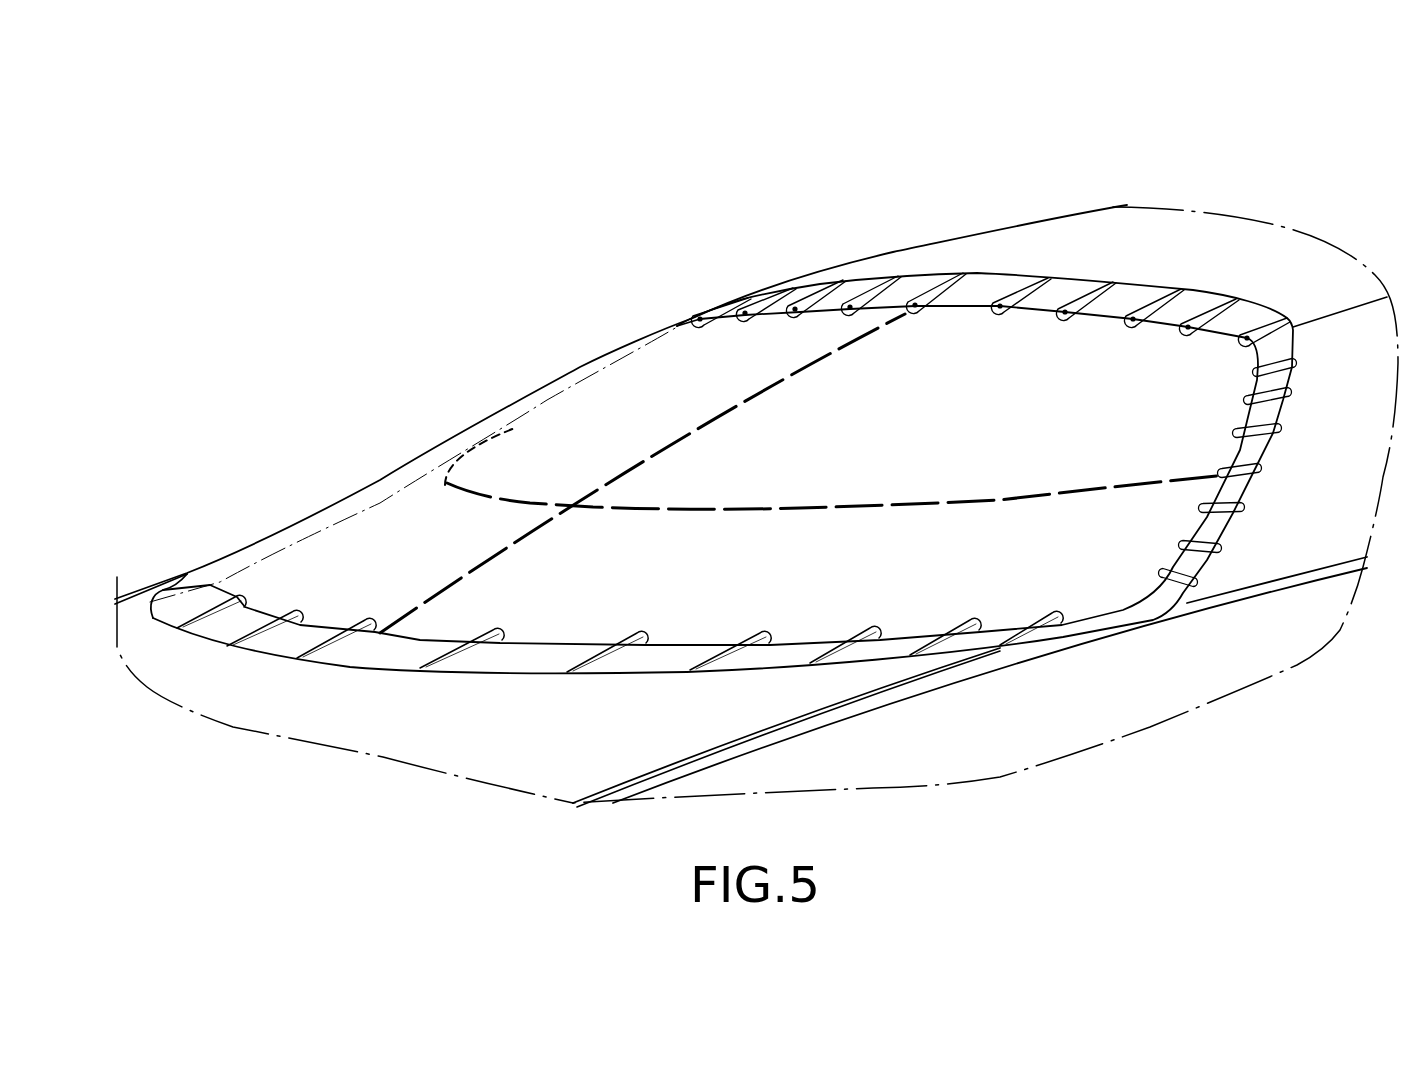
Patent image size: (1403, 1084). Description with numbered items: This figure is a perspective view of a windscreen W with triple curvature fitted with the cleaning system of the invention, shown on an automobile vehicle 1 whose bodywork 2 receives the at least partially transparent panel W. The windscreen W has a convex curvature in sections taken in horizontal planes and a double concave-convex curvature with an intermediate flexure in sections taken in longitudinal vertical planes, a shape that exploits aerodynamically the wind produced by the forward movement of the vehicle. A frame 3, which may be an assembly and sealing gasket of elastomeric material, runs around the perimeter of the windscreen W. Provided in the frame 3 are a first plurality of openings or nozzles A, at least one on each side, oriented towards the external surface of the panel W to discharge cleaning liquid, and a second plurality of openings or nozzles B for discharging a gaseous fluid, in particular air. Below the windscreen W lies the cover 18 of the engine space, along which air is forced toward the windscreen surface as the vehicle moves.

The automobile vehicle 1 is at (428, 277).
The bodywork 2 is at (1173, 252).
The frame 3 is at (982, 303).
The cover of the engine space 18 is at (270, 703).
The windscreen W is at (607, 422).
The liquid discharge openings or nozzles A is at (699, 326).
The gaseous fluid discharge openings or nozzles B is at (745, 318).